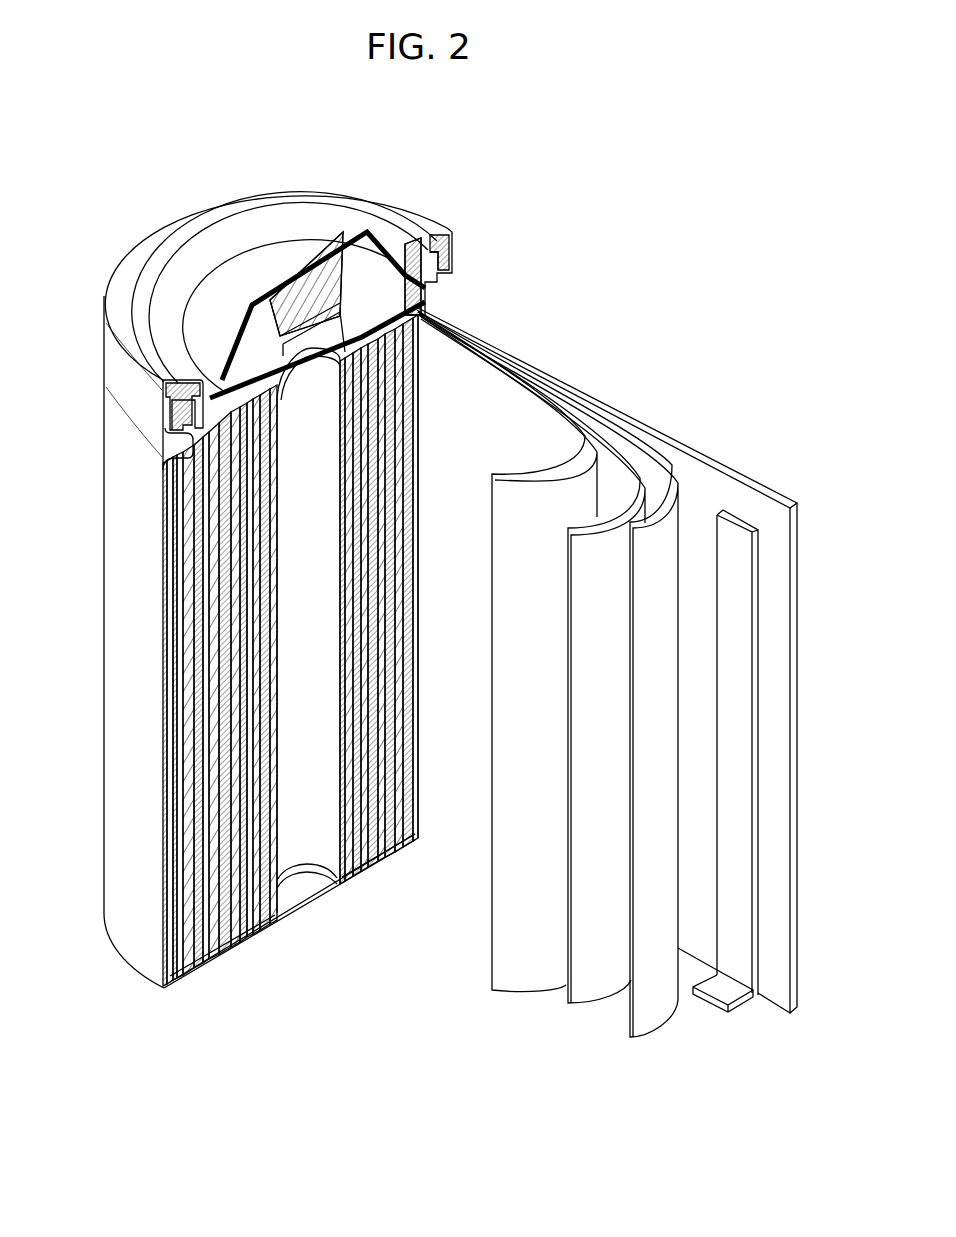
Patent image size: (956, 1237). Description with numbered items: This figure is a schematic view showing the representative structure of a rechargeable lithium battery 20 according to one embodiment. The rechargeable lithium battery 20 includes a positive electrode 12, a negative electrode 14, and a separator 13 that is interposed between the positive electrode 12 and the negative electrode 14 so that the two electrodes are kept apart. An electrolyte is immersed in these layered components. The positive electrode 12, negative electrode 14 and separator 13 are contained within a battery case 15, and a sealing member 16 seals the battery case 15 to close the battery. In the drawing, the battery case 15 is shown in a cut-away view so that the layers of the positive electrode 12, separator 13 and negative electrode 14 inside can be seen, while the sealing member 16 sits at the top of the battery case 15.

The positive electrode 12 is at (744, 481).
The separator 13 is at (567, 402).
The negative electrode 14 is at (610, 451).
The battery case 15 is at (118, 611).
The sealing member 16 is at (265, 245).
The rechargeable lithium battery 20 is at (607, 268).